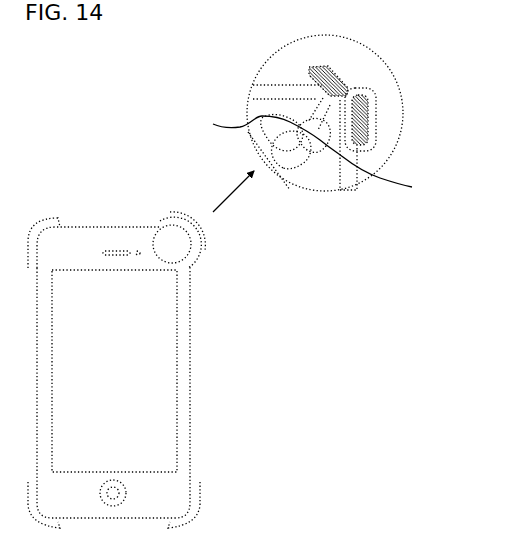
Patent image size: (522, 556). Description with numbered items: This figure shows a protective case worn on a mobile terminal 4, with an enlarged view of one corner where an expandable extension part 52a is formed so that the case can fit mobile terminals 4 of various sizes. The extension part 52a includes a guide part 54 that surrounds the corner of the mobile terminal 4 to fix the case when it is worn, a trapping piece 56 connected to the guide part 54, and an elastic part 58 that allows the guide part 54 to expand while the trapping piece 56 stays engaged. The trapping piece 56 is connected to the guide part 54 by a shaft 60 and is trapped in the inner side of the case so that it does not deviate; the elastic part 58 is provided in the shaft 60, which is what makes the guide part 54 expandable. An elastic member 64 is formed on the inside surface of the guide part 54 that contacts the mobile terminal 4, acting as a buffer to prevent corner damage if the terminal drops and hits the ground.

The mobile terminal 4 is at (152, 383).
The extension part 52a is at (203, 244).
The guide part 54 is at (348, 86).
The trapping piece 56 is at (283, 170).
The elastic part 58 is at (240, 127).
The shaft 60 is at (326, 143).
The elastic member 64 is at (368, 118).